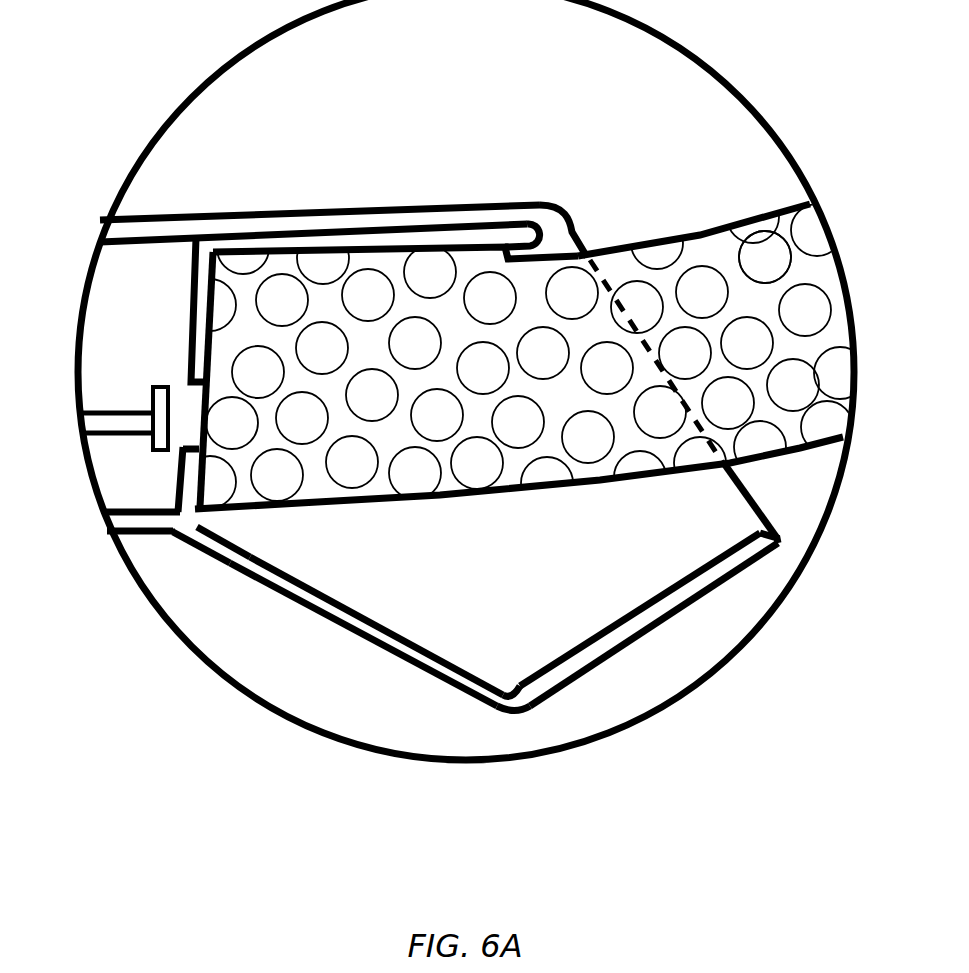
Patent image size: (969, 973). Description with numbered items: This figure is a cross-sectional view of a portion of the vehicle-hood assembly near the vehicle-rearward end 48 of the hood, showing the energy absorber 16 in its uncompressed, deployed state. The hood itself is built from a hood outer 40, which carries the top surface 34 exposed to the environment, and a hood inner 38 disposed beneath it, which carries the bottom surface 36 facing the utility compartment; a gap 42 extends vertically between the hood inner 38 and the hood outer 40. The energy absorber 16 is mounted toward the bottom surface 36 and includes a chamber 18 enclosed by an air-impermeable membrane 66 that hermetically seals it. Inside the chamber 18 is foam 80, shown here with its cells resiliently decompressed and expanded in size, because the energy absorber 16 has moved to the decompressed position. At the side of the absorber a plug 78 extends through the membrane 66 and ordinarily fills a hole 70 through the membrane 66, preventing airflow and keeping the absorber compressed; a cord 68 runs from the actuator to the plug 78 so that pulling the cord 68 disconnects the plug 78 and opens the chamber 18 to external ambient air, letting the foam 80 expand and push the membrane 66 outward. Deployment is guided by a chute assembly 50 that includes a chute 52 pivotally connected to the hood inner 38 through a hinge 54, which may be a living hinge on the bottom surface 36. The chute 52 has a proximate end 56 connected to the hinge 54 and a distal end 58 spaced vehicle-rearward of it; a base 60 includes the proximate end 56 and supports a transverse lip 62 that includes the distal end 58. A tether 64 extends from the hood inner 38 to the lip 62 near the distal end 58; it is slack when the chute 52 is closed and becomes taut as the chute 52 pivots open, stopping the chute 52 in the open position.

The energy absorber 16 is at (395, 273).
The chamber 18 is at (813, 235).
The top surface 34 is at (263, 228).
The bottom surface 36 is at (128, 560).
The hood inner 38 is at (127, 510).
The hood outer 40 is at (198, 240).
The gap 42 is at (135, 285).
The vehicle-rearward end 48 is at (563, 210).
The chute assembly 50 is at (566, 707).
The chute 52 is at (440, 688).
The hinge 54 is at (175, 537).
The proximate end 56 is at (193, 555).
The distal end 58 is at (783, 541).
The base 60 is at (357, 634).
The lip 62 is at (633, 640).
The tether 64 is at (583, 245).
The membrane 66 is at (500, 495).
The cord 68 is at (113, 413).
The hole 70 is at (182, 382).
The plug 78 is at (150, 437).
The foam 80 is at (760, 243).